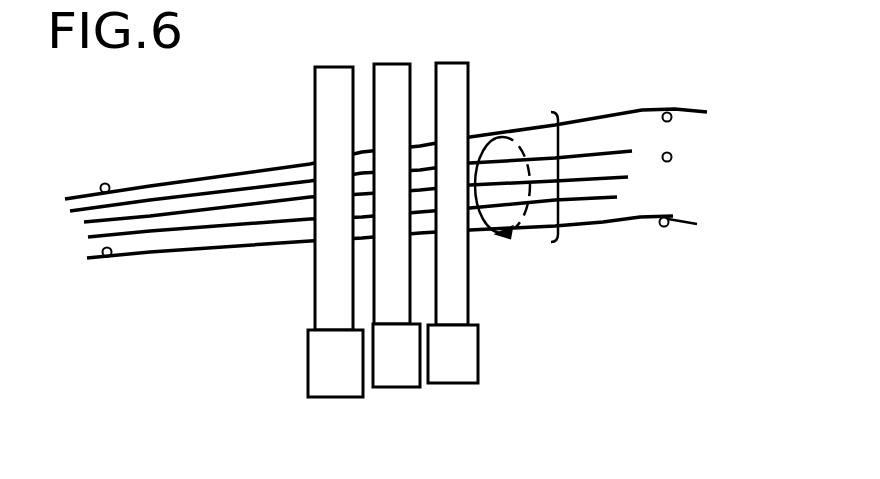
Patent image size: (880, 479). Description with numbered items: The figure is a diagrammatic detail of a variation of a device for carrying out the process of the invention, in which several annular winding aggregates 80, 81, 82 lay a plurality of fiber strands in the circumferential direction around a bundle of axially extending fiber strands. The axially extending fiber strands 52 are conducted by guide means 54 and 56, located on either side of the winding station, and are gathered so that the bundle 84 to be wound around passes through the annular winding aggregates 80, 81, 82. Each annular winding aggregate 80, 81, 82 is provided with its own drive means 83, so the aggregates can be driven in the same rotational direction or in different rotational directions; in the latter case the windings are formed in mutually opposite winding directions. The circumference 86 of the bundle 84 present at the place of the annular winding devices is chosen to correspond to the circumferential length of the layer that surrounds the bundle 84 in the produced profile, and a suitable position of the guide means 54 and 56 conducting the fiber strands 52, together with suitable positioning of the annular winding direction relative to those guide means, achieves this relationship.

The axially extending fiber strands 52 is at (642, 110).
The guide means 54 is at (671, 120).
The guide means 56 is at (105, 183).
The annular winding aggregate 80 is at (333, 76).
The annular winding aggregate 81 is at (392, 74).
The annular winding aggregate 82 is at (450, 74).
The drive means 83 is at (338, 386).
The bundle 84 is at (560, 174).
The circumference 86 is at (502, 133).